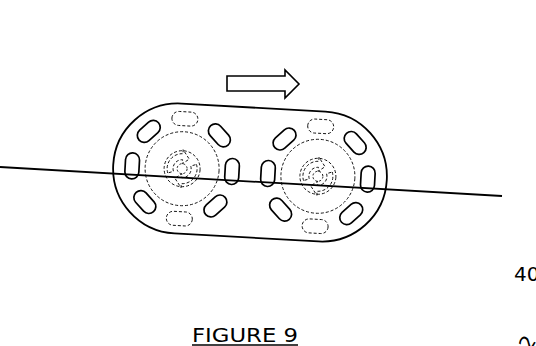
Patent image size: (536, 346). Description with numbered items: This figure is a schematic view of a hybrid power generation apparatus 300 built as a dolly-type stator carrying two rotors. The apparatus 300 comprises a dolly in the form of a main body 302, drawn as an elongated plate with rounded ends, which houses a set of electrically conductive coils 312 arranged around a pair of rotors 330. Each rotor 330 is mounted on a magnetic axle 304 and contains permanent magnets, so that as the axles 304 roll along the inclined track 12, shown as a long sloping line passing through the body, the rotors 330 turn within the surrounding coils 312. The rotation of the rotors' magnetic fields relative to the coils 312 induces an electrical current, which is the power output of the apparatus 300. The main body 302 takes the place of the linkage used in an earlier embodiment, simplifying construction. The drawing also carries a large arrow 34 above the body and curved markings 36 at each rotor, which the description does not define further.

The hybrid power generation apparatus 300 is at (90, 80).
The direction of insertion arrow 34 is at (264, 81).
The main body 302 is at (320, 99).
The electrically conductive coils 312 is at (178, 220).
The rotors 330 is at (170, 142).
The rotation arrows 36 is at (163, 157).
The magnetic axles 304 is at (182, 168).
The inclined track 12 is at (447, 181).